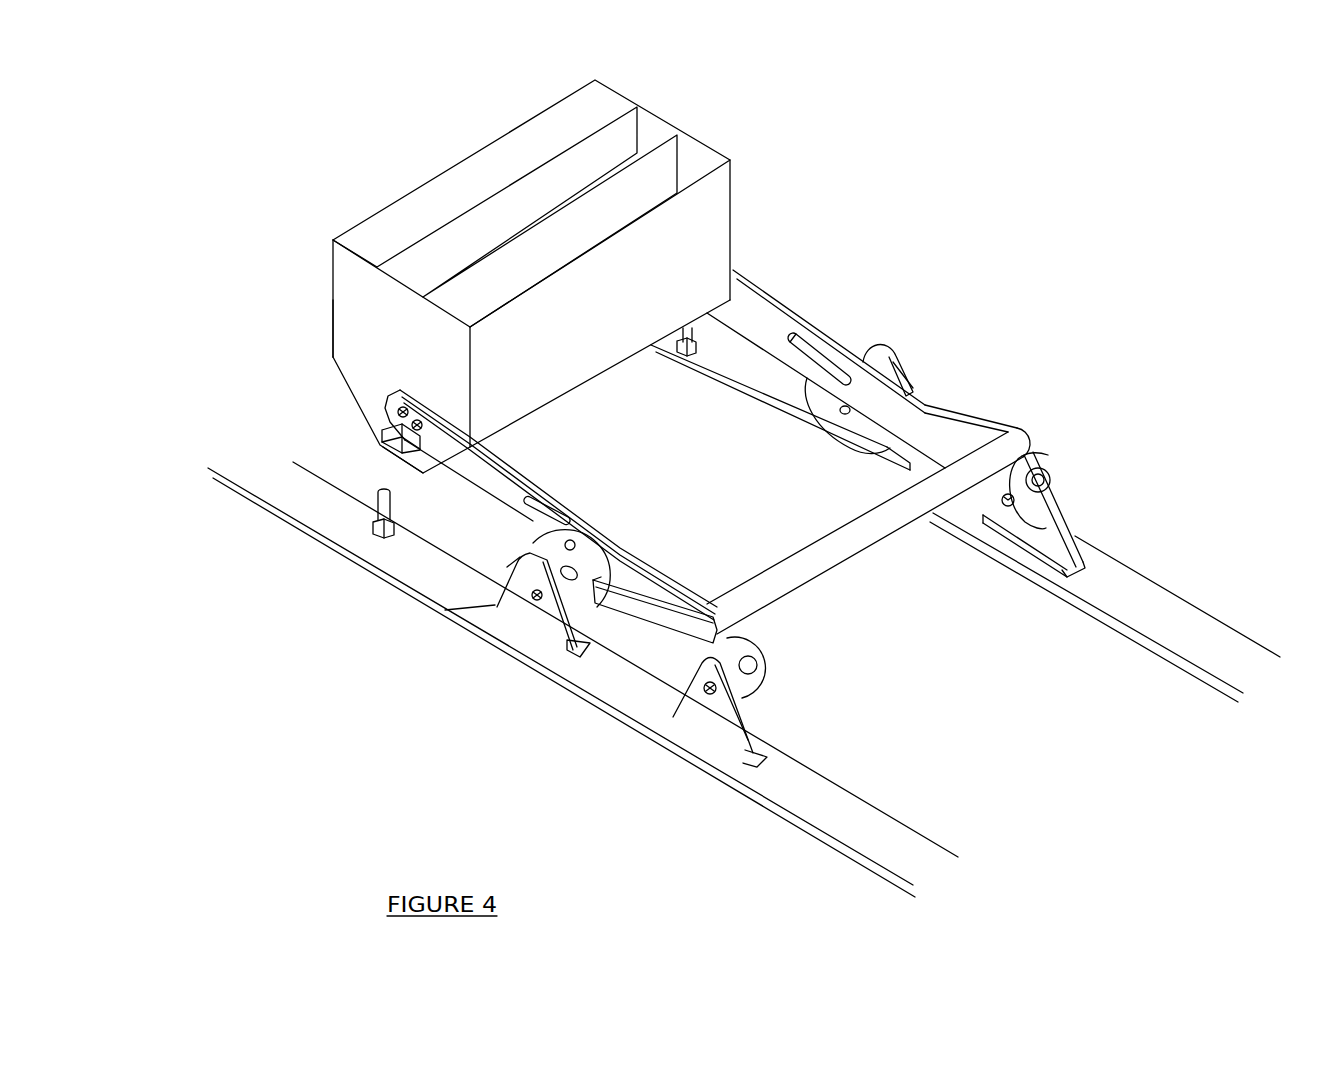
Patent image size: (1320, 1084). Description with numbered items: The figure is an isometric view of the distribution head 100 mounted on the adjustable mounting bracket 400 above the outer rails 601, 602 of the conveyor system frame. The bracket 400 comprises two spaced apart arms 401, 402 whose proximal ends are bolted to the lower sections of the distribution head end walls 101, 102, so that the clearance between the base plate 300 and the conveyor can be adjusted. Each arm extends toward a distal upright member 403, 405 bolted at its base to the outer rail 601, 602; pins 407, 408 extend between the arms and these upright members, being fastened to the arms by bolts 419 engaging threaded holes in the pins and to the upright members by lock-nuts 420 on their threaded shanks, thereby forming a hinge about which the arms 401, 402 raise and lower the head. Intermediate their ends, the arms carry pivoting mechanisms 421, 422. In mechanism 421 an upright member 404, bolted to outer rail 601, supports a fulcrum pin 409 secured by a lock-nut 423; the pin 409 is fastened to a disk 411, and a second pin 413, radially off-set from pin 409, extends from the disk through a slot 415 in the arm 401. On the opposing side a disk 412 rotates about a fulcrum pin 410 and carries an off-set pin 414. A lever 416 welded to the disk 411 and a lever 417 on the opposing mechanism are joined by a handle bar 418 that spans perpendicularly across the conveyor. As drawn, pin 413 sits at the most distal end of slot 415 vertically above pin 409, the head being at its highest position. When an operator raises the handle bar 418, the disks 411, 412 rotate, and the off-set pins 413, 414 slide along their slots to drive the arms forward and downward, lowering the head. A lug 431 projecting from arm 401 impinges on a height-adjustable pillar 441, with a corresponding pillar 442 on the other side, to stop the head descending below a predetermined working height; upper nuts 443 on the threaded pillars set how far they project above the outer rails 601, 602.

The distribution head 100 is at (497, 274).
The distribution head end wall 101 is at (372, 328).
The distribution head end wall 102 is at (713, 150).
The base plate 300 is at (363, 438).
The mounting bracket 400 is at (744, 679).
The arm 401 is at (510, 480).
The arm 402 is at (763, 322).
The distal upright member 403 is at (733, 737).
The upright member 404 is at (557, 627).
The distal upright member 405 is at (900, 358).
The pin 407 is at (743, 675).
The pin 408 is at (1043, 480).
The fulcrum pin 409 is at (590, 612).
The fulcrum pin 410 is at (847, 413).
The disk 411 is at (580, 647).
The disk 412 is at (857, 440).
The second pin 413 is at (570, 545).
The off-set pin 414 is at (843, 370).
The slot 415 is at (537, 505).
The lever 416 is at (810, 353).
The lever 417 is at (995, 422).
The handle bar 418 is at (845, 555).
The bolt 419 is at (1007, 510).
The lock-nut 420 is at (707, 693).
The pivoting mechanism 421 is at (468, 631).
The pivoting mechanism 422 is at (927, 306).
The lock-nut 423 is at (537, 597).
The lug 431 is at (372, 441).
The pillar 441 is at (377, 500).
The pillar 442 is at (683, 337).
The upper nut 443 is at (377, 525).
The outer rail 601 is at (862, 823).
The outer rail 602 is at (1162, 625).